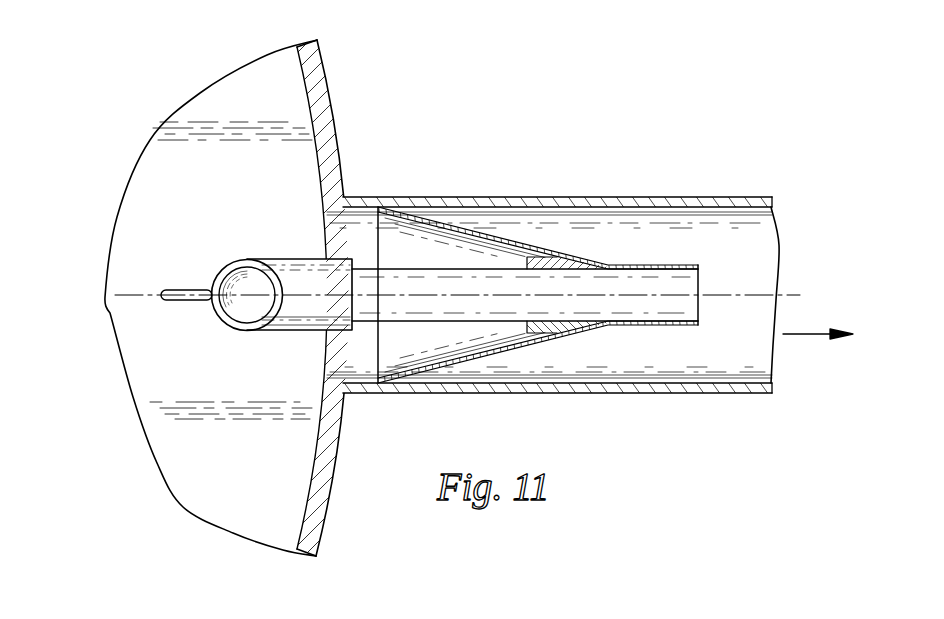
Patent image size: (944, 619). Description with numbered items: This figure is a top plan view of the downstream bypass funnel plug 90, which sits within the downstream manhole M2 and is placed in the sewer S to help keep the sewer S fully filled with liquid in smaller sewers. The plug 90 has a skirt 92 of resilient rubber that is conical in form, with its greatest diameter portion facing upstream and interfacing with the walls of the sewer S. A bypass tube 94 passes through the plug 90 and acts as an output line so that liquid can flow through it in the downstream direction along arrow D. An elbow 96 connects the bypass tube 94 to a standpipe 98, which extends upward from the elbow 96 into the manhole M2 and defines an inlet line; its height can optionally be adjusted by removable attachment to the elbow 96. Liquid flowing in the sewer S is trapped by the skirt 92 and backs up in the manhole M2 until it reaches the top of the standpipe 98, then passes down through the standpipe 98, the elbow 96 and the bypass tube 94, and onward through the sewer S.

The downstream bypass funnel plug 90 is at (447, 164).
The skirt 92 is at (517, 197).
The bypass tube 94 is at (402, 313).
The elbow 96 is at (293, 324).
The standpipe 98 is at (229, 261).
The sewer S is at (622, 197).
The downstream manhole M2 is at (243, 166).
The downstream direction arrow D is at (820, 335).